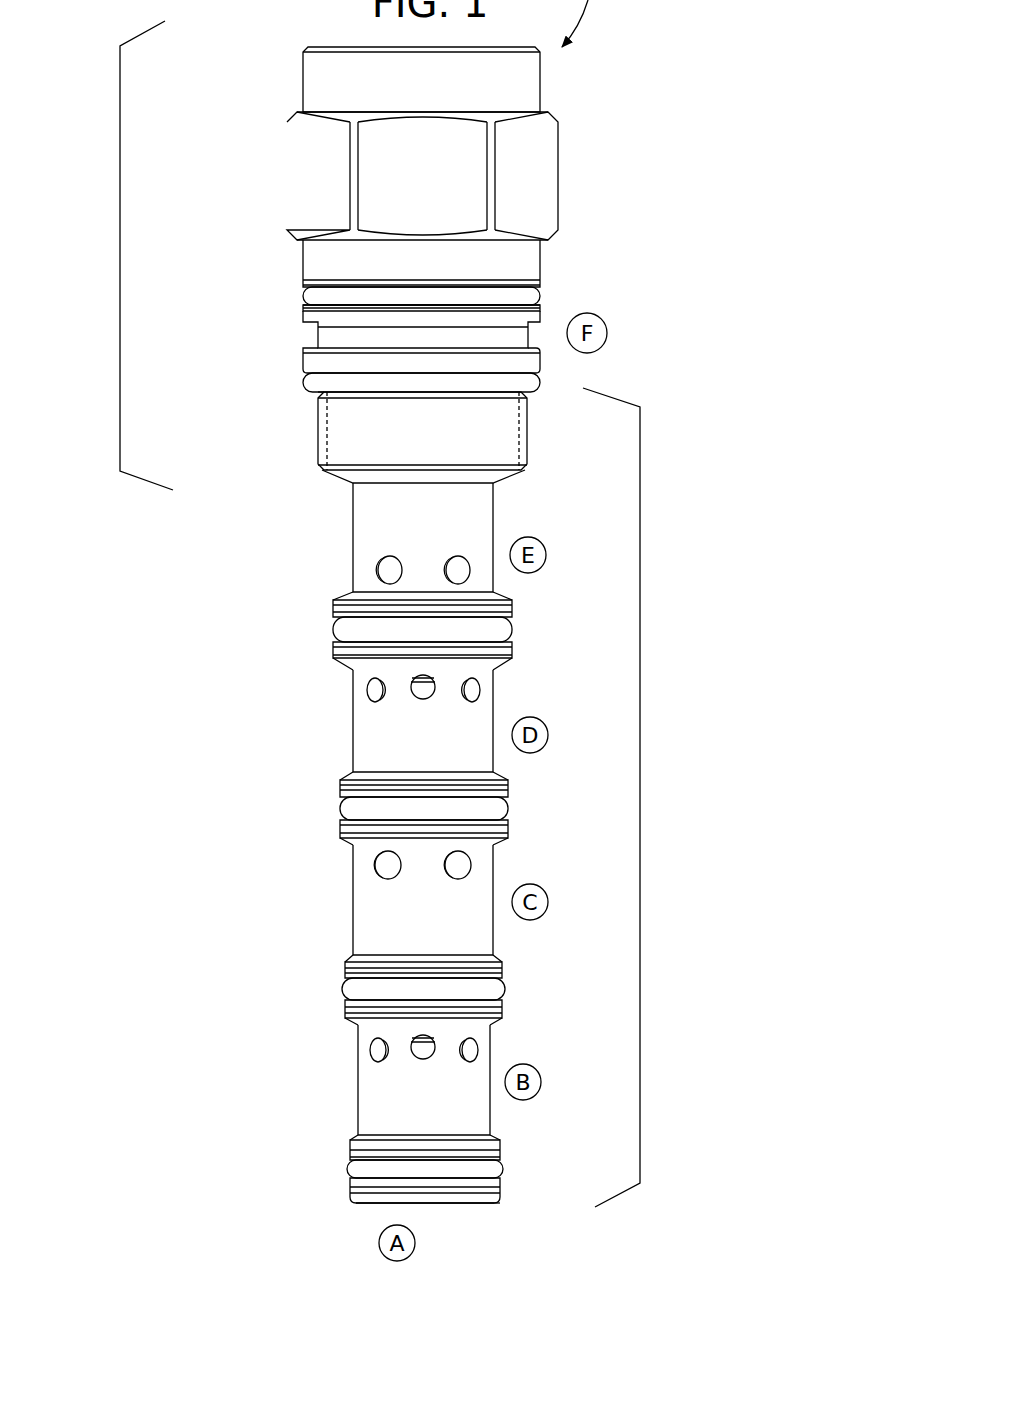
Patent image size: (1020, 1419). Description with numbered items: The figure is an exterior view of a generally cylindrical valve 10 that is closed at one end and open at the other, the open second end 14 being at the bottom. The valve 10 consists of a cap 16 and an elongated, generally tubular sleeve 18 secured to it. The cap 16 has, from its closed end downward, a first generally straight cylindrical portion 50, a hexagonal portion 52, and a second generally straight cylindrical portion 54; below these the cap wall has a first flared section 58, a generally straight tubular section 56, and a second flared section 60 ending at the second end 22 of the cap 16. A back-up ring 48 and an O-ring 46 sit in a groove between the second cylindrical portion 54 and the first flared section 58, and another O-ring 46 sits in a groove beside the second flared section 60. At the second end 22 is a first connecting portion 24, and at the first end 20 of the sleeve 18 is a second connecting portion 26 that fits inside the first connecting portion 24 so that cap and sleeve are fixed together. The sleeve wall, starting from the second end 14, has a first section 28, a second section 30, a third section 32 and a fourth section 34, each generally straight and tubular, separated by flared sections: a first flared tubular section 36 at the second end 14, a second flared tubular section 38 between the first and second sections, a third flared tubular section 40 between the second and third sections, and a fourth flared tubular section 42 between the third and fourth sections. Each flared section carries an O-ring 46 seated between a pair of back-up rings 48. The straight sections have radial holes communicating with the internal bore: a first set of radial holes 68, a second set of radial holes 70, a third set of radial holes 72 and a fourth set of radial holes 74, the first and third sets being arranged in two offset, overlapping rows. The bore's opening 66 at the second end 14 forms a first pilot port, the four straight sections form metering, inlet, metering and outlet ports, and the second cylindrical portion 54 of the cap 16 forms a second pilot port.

The valve 10 is at (733, 632).
The second end 14 is at (488, 1217).
The cap 16 is at (120, 258).
The sleeve 18 is at (640, 791).
The first end 20 is at (310, 406).
The second end 22 is at (538, 477).
The first connecting portion 24 is at (320, 440).
The second connecting portion 26 is at (530, 433).
The first section 28 is at (358, 1110).
The second section 30 is at (353, 922).
The third section 32 is at (353, 753).
The fourth section 34 is at (353, 532).
The first flared tubular section 36 is at (330, 1173).
The second flared tubular section 38 is at (328, 993).
The third flared tubular section 40 is at (320, 812).
The fourth flared tubular section 42 is at (317, 632).
The O-ring 46 is at (310, 296).
The back-up ring 48 is at (543, 285).
The first generally straight cylindrical portion 50 is at (540, 92).
The hexagonal portion 52 is at (558, 172).
The second generally straight cylindrical portion 54 is at (540, 262).
The generally straight tubular section 56 is at (310, 344).
The first flared section 58 is at (555, 305).
The second flared section 60 is at (553, 363).
The opening 66 is at (425, 1203).
The first set of radial holes 68 is at (464, 1055).
The second set of radial holes 70 is at (445, 866).
The third set of radial holes 72 is at (465, 693).
The fourth set of radial holes 74 is at (446, 572).